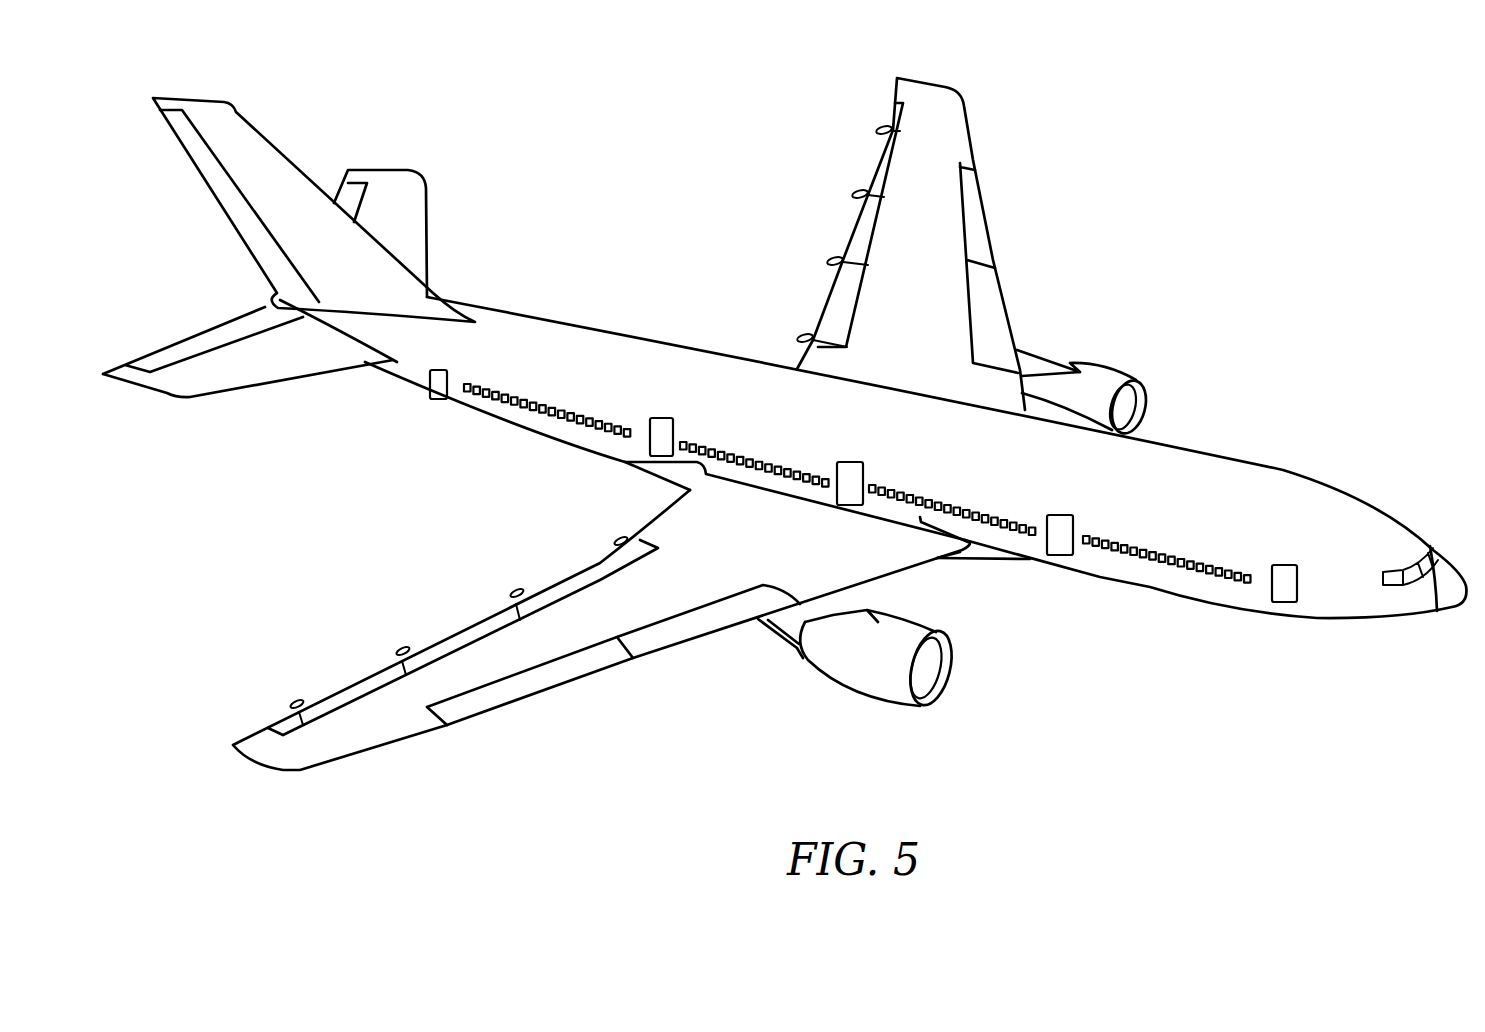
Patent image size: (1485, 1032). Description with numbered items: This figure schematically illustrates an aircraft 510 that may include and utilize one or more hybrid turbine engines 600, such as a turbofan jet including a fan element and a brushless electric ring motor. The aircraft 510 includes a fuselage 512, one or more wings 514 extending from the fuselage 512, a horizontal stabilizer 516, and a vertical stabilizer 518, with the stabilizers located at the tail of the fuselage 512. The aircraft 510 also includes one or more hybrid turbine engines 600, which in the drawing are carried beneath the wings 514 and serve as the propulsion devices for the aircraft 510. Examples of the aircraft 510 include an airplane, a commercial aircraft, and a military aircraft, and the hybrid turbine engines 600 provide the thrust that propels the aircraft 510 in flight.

The aircraft 510 is at (1253, 197).
The fuselage 512 is at (594, 323).
The wings 514 is at (977, 137).
The horizontal stabilizer 516 is at (427, 231).
The vertical stabilizer 518 is at (253, 127).
The hybrid turbine engines 600 is at (1143, 409).